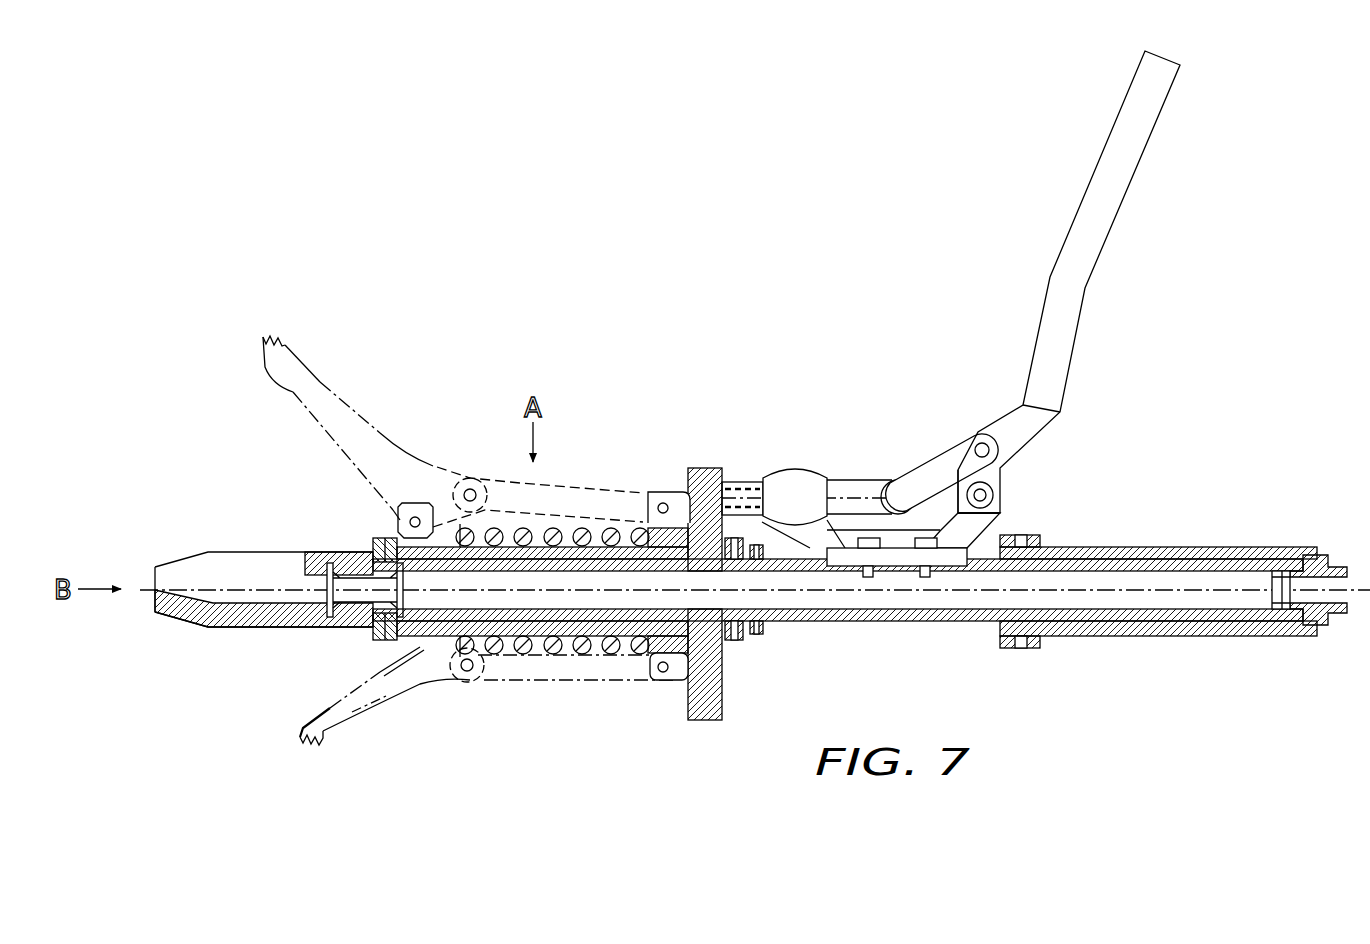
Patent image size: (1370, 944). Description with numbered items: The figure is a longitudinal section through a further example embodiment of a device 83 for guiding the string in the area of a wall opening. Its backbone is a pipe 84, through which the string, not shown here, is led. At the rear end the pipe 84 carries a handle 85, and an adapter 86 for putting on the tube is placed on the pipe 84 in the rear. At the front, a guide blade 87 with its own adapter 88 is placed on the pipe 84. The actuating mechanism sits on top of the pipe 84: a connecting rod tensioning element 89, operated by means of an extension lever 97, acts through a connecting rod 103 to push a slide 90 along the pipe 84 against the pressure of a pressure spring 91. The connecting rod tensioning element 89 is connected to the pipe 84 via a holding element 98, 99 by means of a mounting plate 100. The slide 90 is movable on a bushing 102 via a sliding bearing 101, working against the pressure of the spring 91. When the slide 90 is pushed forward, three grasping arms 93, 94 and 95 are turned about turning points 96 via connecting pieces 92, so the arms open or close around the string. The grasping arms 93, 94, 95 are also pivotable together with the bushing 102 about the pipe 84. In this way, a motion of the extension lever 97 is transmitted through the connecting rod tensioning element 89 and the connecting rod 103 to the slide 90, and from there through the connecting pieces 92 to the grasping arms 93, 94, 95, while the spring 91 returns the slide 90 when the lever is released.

The device 83 is at (277, 644).
The pipe 84 is at (375, 540).
The handle 85 is at (1257, 548).
The adapter 86 is at (1338, 568).
The guide blade 87 is at (183, 565).
The adapter 88 is at (362, 628).
The connecting rod tensioning element 89 is at (937, 462).
The slide 90 is at (704, 479).
The pressure spring 91 is at (498, 654).
The connecting pieces 92 is at (605, 497).
The grasping arm 93 is at (300, 392).
The grasping arm 94 is at (368, 697).
The grasping arm 95 is at (396, 705).
The turning points 96 is at (418, 517).
The extension lever 97 is at (1125, 177).
The holding element 98 is at (791, 470).
The holding element 99 is at (982, 523).
The mounting plate 100 is at (898, 562).
The sliding bearing 101 is at (677, 660).
The bushing 102 is at (602, 640).
The connecting rod 103 is at (858, 486).